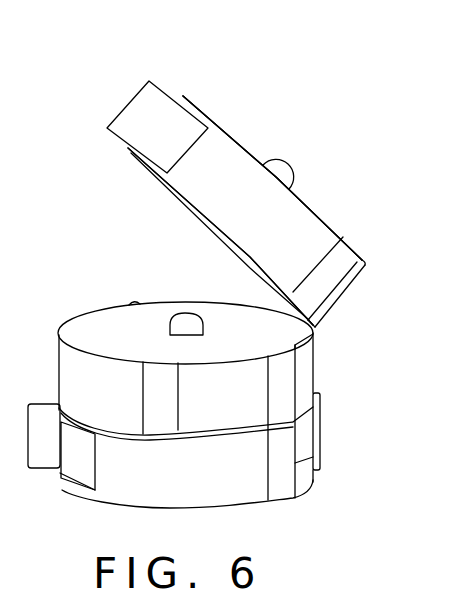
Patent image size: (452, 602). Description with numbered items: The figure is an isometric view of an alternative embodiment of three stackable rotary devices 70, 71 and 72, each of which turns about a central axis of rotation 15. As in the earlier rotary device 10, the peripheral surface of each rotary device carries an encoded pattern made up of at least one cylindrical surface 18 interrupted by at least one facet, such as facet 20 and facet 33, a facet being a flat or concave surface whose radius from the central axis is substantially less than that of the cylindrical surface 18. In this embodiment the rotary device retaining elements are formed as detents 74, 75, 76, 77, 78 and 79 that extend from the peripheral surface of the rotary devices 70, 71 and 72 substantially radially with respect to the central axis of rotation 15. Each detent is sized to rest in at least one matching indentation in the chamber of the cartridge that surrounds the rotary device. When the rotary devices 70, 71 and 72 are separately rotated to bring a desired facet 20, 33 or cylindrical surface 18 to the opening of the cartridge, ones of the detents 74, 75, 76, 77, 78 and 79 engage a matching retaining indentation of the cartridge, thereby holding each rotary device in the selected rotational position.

The rotary device 10 is at (221, 165).
The central axis of rotation 15 is at (288, 162).
The cylindrical surface 18 is at (245, 210).
The facet 20 is at (158, 143).
The facet 33 is at (75, 451).
The rotary device 70 is at (264, 210).
The rotary device 71 is at (100, 310).
The rotary device 72 is at (253, 500).
The detent 74 is at (355, 277).
The detent 75 is at (364, 261).
The detent 76 is at (297, 383).
The detent 77 is at (164, 396).
The detent 78 is at (319, 430).
The detent 79 is at (297, 462).